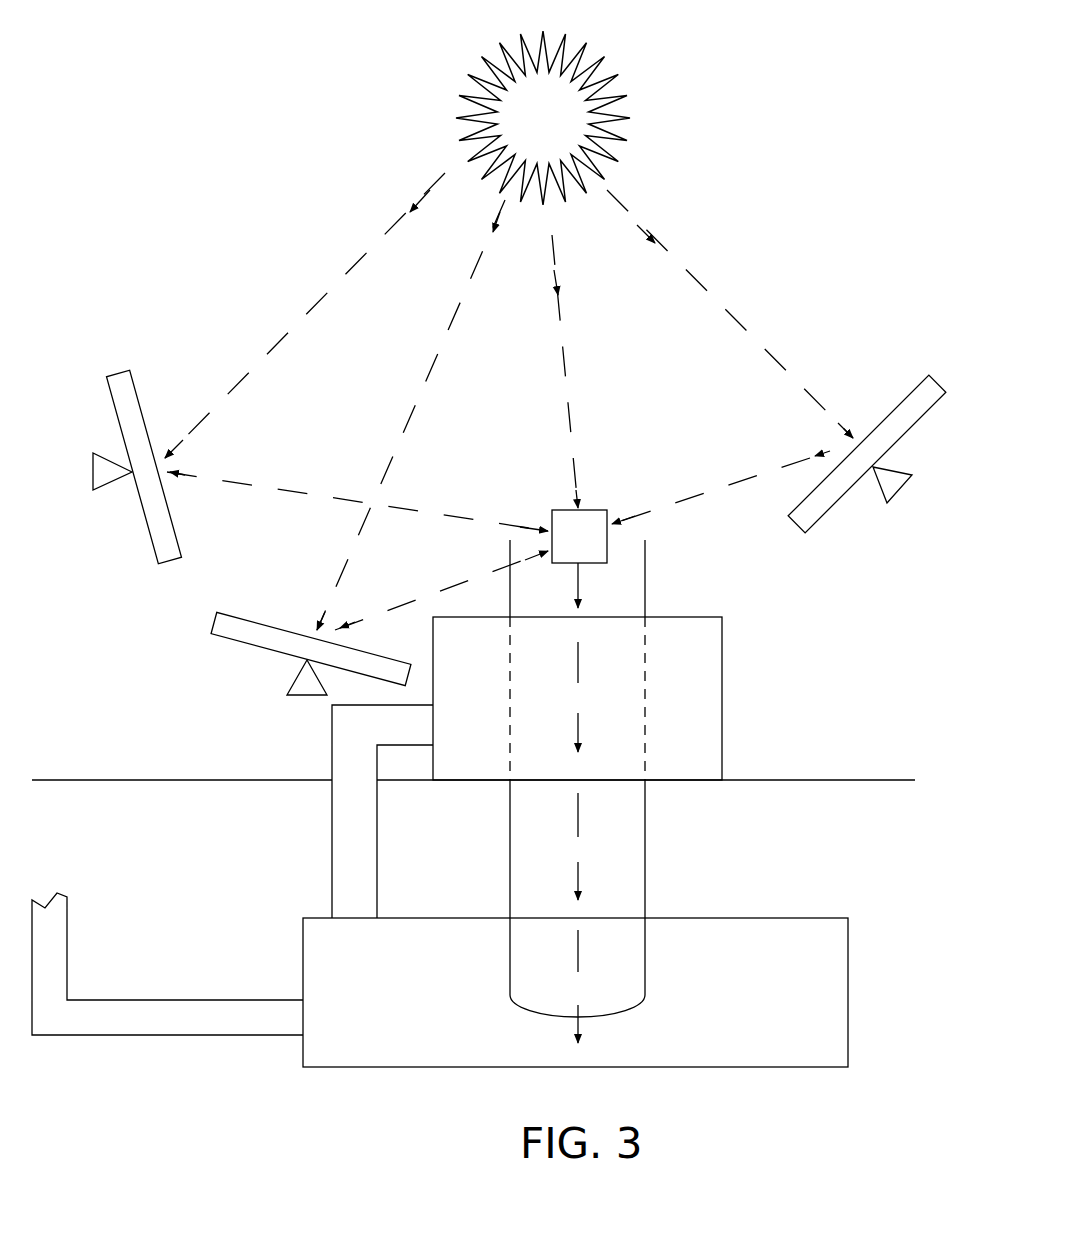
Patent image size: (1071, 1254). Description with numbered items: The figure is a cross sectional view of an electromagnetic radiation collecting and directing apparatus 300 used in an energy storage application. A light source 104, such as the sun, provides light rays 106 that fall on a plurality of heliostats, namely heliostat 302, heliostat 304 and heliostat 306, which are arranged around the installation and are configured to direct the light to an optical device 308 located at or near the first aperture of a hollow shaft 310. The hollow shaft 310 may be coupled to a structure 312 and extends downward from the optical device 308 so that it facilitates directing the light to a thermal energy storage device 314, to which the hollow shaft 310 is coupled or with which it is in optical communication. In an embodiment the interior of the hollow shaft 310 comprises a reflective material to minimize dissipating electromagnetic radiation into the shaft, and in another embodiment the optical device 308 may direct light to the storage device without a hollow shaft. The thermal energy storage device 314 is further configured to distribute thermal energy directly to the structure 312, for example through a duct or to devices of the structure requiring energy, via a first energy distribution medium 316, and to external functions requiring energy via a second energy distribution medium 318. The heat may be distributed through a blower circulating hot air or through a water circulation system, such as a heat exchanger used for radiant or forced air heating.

The electromagnetic radiation collecting and directing apparatus 300 is at (198, 62).
The light source 104 is at (543, 118).
The light rays 106 is at (690, 275).
The heliostat 302 is at (923, 533).
The heliostat 304 is at (240, 683).
The heliostat 306 is at (163, 373).
The optical device 308 is at (579, 536).
The hollow shaft 310 is at (645, 842).
The structure 312 is at (577, 698).
The thermal energy storage device 314 is at (575, 992).
The first energy distribution medium 316 is at (382, 811).
The second energy distribution medium 318 is at (167, 964).